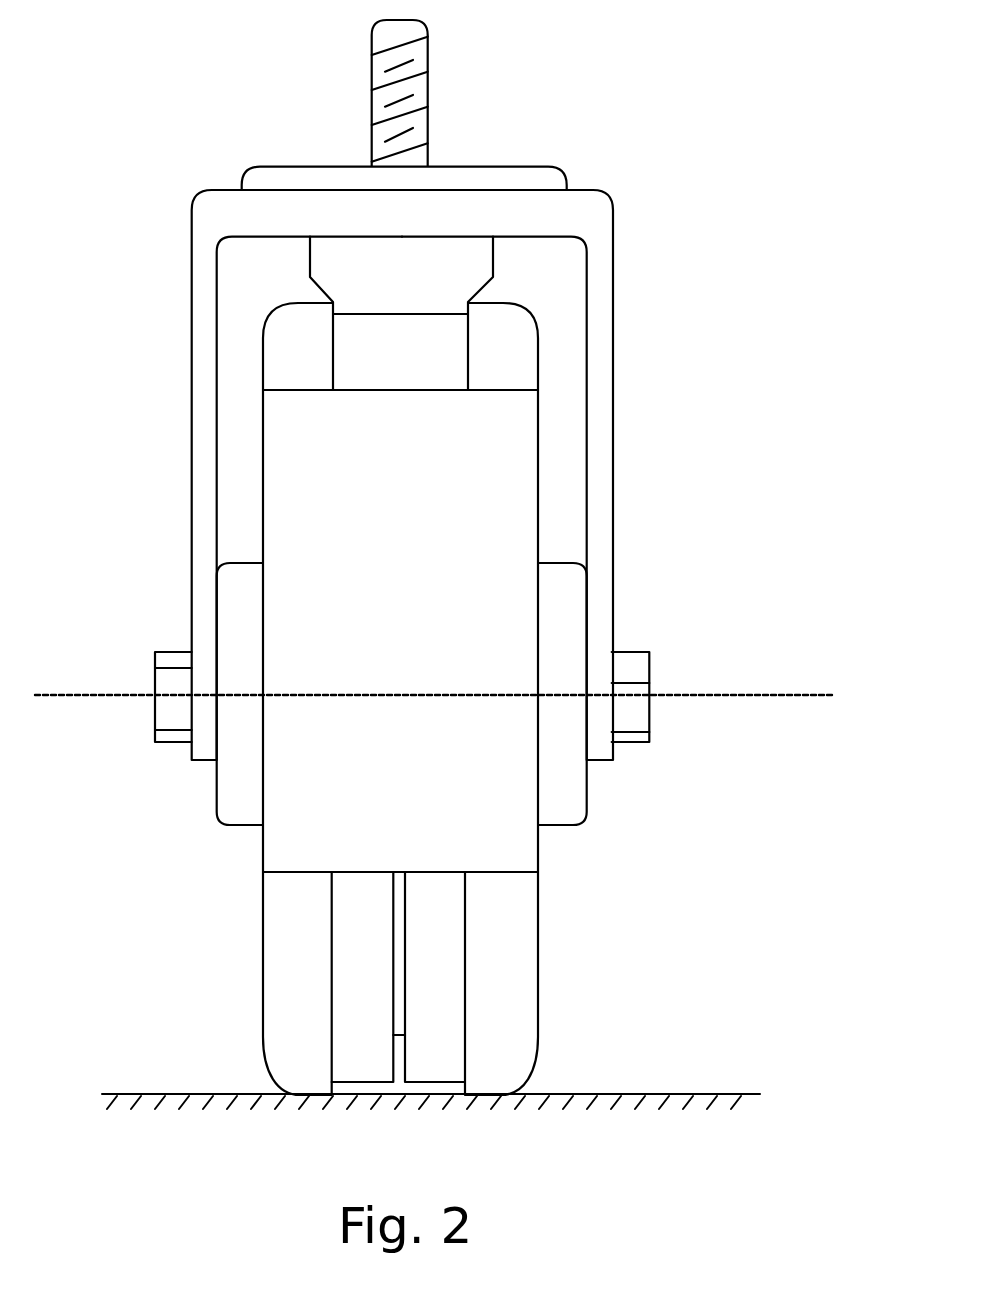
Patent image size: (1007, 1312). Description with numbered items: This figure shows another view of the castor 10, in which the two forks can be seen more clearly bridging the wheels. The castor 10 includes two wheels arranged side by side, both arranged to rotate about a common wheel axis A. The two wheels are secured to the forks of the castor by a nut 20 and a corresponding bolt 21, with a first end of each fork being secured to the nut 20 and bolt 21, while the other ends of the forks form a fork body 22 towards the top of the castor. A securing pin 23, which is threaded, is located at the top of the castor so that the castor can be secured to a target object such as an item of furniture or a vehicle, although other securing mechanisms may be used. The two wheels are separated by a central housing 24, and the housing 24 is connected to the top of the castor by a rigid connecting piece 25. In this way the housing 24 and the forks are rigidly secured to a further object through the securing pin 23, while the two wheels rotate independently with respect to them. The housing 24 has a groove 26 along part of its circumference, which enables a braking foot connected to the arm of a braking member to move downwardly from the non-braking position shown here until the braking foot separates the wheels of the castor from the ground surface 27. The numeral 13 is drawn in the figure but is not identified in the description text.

The castor 10 is at (703, 80).
The wheel 13 is at (490, 488).
The nut 20 is at (155, 664).
The bolt 21 is at (650, 683).
The fork body 22 is at (250, 174).
The securing pin 23 is at (429, 50).
The central housing 24 is at (438, 1033).
The rigid connecting piece 25 is at (460, 258).
The groove 26 is at (397, 963).
The ground surface 27 is at (592, 1143).
The wheel axis A is at (760, 695).